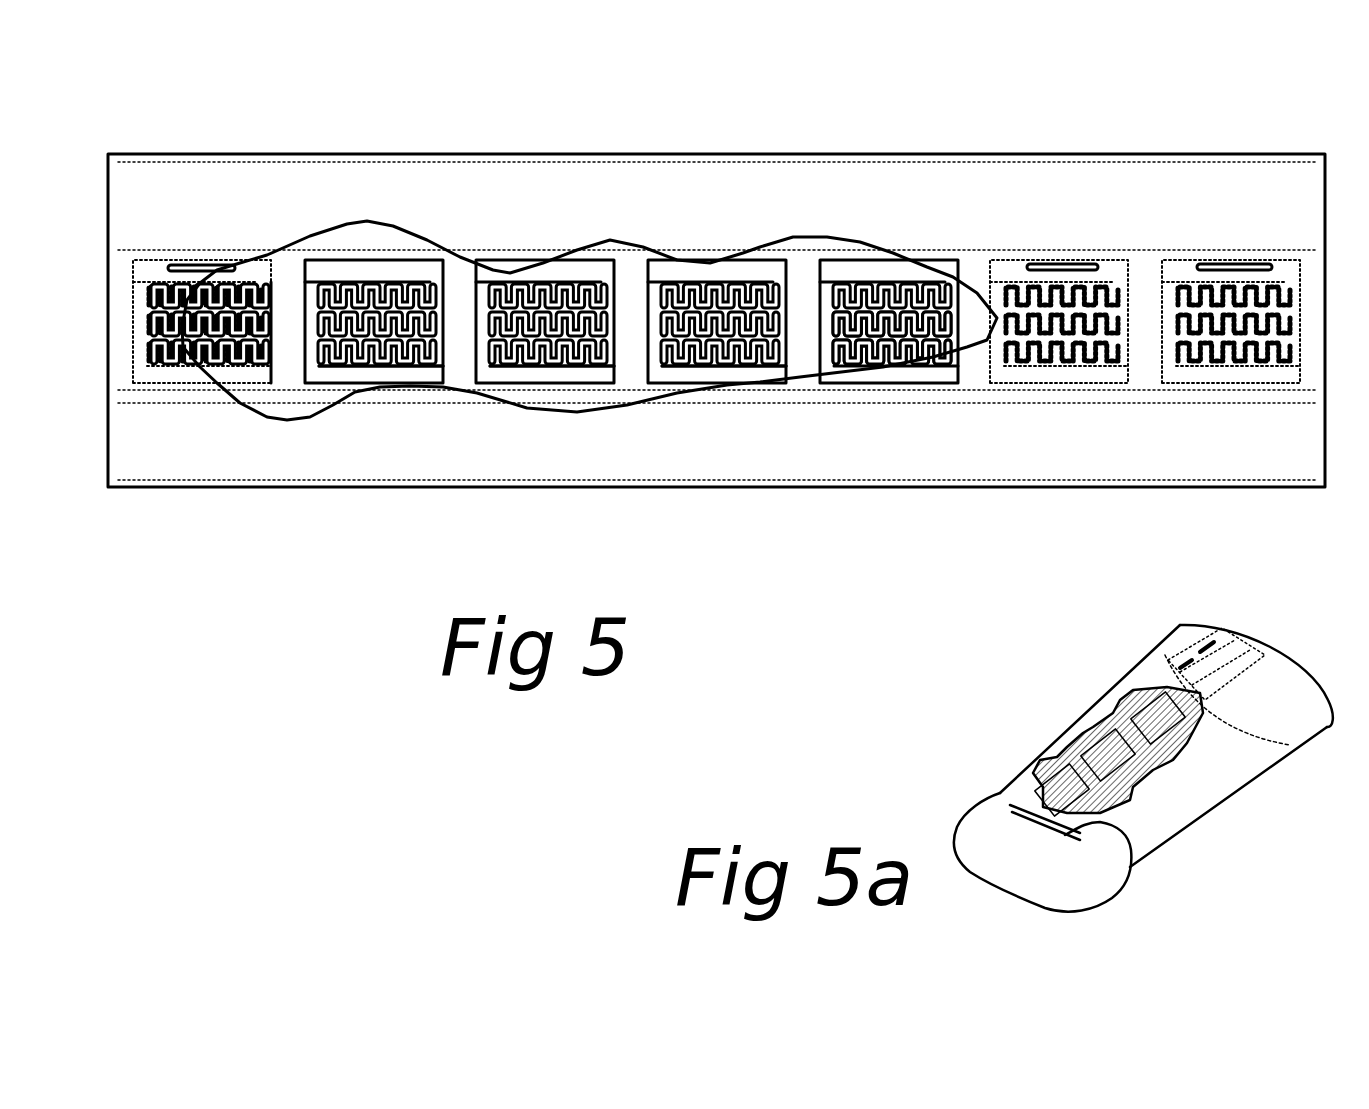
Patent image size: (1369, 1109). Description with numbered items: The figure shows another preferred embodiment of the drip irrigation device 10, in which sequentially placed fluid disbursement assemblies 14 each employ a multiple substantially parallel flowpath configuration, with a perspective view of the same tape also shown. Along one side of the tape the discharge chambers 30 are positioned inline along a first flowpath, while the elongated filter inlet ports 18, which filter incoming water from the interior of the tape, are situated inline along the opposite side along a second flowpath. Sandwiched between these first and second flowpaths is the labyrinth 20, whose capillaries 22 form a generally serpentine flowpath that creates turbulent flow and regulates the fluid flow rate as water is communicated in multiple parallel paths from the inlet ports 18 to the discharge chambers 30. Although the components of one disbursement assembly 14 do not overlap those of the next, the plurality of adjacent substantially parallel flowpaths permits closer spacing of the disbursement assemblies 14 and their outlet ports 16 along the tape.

In FIG. 5A, the drip irrigation device 10 is at (1070, 717).
In FIG. 5, the fluid disbursement assembly 14 is at (300, 502).
In FIG. 5, the outlet port 16 is at (215, 270).
In FIG. 5, the filter inlet port 18 is at (345, 380).
In FIG. 5, the labyrinth 20 is at (910, 343).
In FIG. 5, the capillaries 22 is at (867, 335).
In FIG. 5, the discharge chamber 30 is at (568, 272).